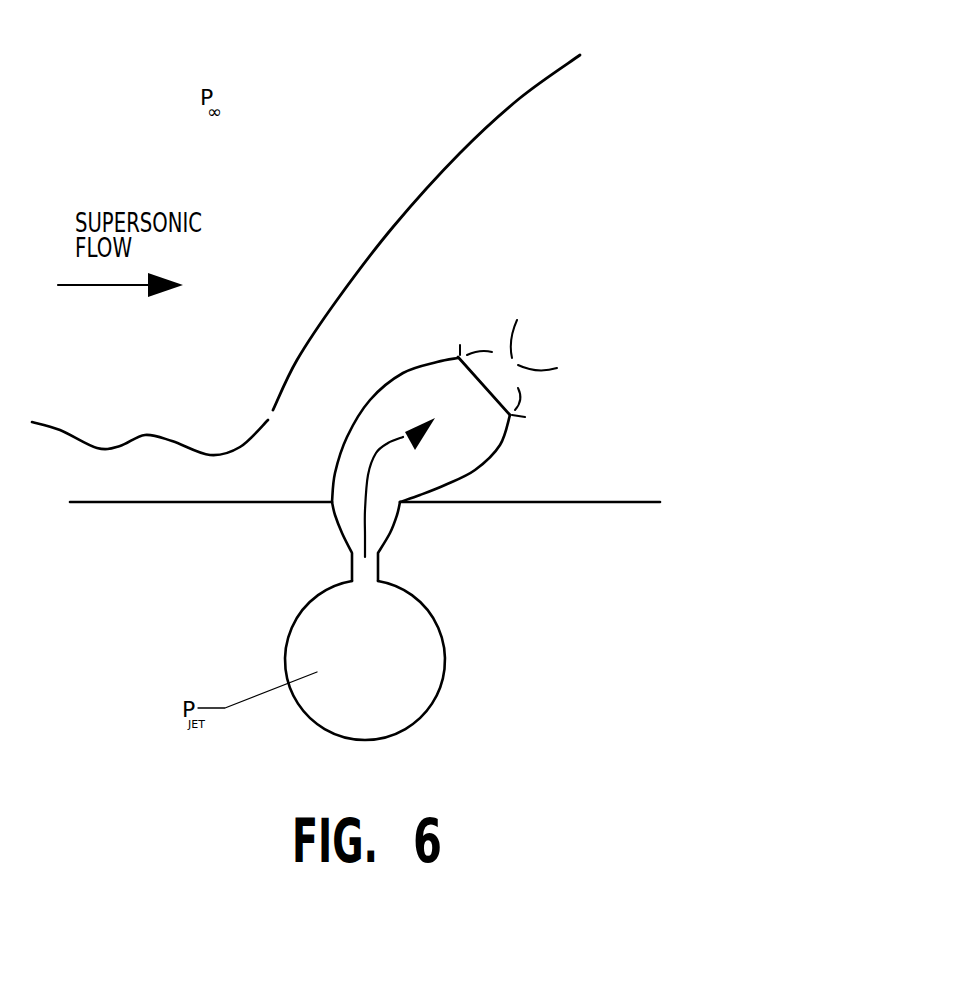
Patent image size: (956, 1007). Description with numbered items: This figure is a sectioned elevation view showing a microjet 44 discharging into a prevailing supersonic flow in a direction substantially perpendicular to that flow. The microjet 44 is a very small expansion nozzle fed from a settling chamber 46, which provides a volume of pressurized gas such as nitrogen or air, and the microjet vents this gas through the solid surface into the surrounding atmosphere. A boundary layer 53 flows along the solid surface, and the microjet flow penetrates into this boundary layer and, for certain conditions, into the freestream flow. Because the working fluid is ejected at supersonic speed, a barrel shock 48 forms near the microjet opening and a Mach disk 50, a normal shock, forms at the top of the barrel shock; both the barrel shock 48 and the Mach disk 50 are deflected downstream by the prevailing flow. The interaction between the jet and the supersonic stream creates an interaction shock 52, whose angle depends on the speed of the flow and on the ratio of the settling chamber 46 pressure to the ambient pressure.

The microjet 44 is at (385, 523).
The settling chamber 46 is at (433, 667).
The barrel shock 48 is at (473, 452).
The Mach disk 50 is at (493, 388).
The interaction shock 52 is at (457, 153).
The boundary layer 53 is at (135, 455).